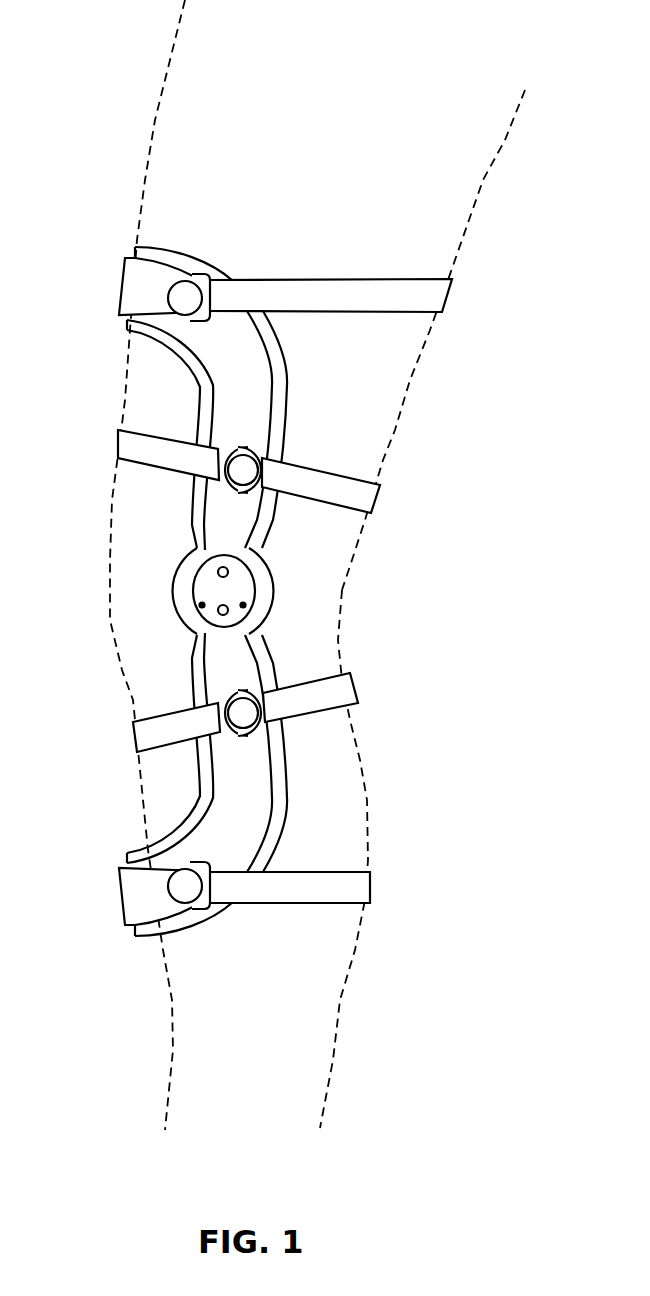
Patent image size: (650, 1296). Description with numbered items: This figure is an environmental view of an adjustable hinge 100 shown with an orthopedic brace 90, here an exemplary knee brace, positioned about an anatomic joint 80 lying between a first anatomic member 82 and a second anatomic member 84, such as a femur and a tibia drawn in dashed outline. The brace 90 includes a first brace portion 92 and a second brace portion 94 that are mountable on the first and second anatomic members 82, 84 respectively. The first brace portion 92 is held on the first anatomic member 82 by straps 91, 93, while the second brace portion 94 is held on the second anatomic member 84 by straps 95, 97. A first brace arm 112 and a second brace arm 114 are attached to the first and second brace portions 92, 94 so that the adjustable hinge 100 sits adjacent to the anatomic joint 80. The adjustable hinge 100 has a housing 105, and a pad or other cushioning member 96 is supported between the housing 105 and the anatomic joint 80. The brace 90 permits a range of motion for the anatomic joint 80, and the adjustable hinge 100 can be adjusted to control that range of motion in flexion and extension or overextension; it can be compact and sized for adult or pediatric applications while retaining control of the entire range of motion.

The anatomic joint 80 is at (157, 612).
The first anatomic member 82 is at (458, 193).
The second anatomic member 84 is at (328, 985).
The orthopedic brace 90 is at (325, 430).
The strap 91 is at (432, 297).
The first brace portion 92 is at (282, 384).
The strap 93 is at (365, 493).
The second brace portion 94 is at (282, 767).
The strap 95 is at (338, 693).
The cushioning member 96 is at (258, 592).
The strap 97 is at (360, 889).
The adjustable hinge 100 is at (231, 581).
The housing 105 is at (212, 587).
The first brace arm 112 is at (213, 523).
The second brace arm 114 is at (218, 662).